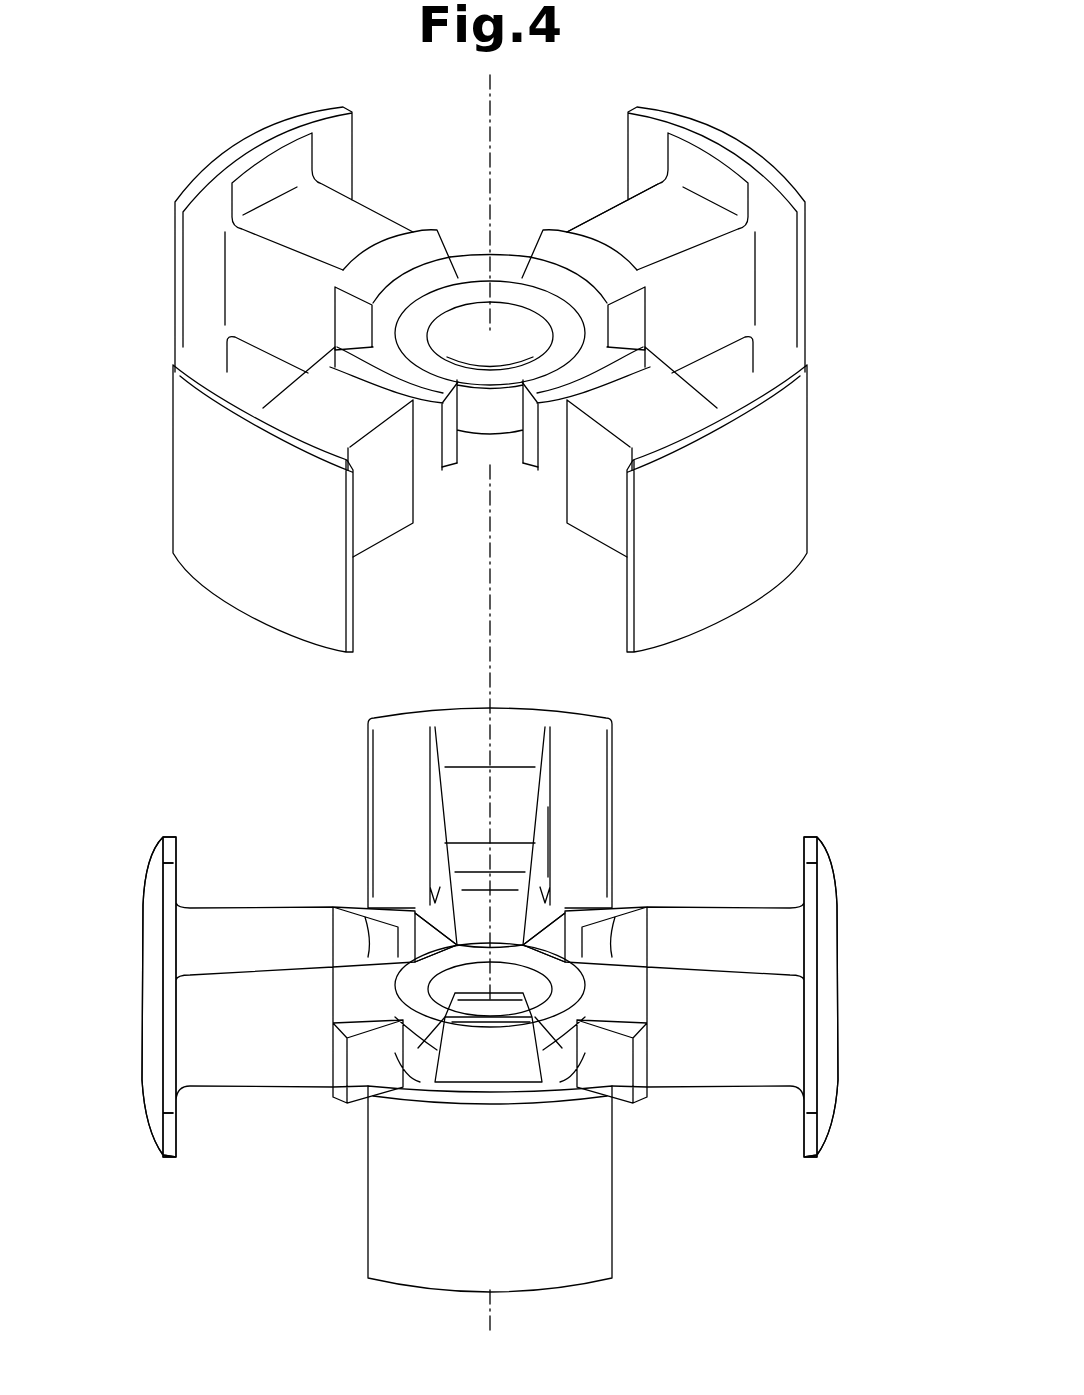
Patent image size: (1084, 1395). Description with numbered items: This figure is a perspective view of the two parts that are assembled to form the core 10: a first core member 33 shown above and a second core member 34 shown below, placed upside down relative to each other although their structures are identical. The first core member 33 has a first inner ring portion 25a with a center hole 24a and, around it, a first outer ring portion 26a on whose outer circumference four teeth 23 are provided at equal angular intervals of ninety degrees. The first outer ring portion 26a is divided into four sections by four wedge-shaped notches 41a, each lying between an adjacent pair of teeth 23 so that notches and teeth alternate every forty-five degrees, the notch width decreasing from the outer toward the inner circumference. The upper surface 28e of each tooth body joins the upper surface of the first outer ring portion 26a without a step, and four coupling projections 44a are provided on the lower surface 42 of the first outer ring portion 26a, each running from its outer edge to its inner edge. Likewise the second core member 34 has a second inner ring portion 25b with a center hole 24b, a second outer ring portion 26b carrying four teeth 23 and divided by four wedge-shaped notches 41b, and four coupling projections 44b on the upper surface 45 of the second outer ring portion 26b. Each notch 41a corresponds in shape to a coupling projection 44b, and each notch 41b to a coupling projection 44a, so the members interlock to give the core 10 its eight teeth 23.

The core 10 is at (823, 746).
The teeth 23 is at (257, 147).
The center hole 24a is at (470, 330).
The center hole 24b is at (403, 988).
The first inner ring portion 25a is at (478, 388).
The second inner ring portion 25b is at (552, 1030).
The first outer ring portion 26a is at (645, 335).
The second outer ring portion 26b is at (333, 1092).
The upper surface of tooth body 28e is at (600, 227).
The first core member 33 is at (530, 430).
The second core member 34 is at (490, 940).
The notches 41a is at (533, 258).
The notches 41b is at (412, 935).
The lower surface 42 is at (552, 466).
The coupling projections 44a is at (445, 462).
The coupling projections 44b is at (453, 887).
The upper surface 45 is at (558, 892).